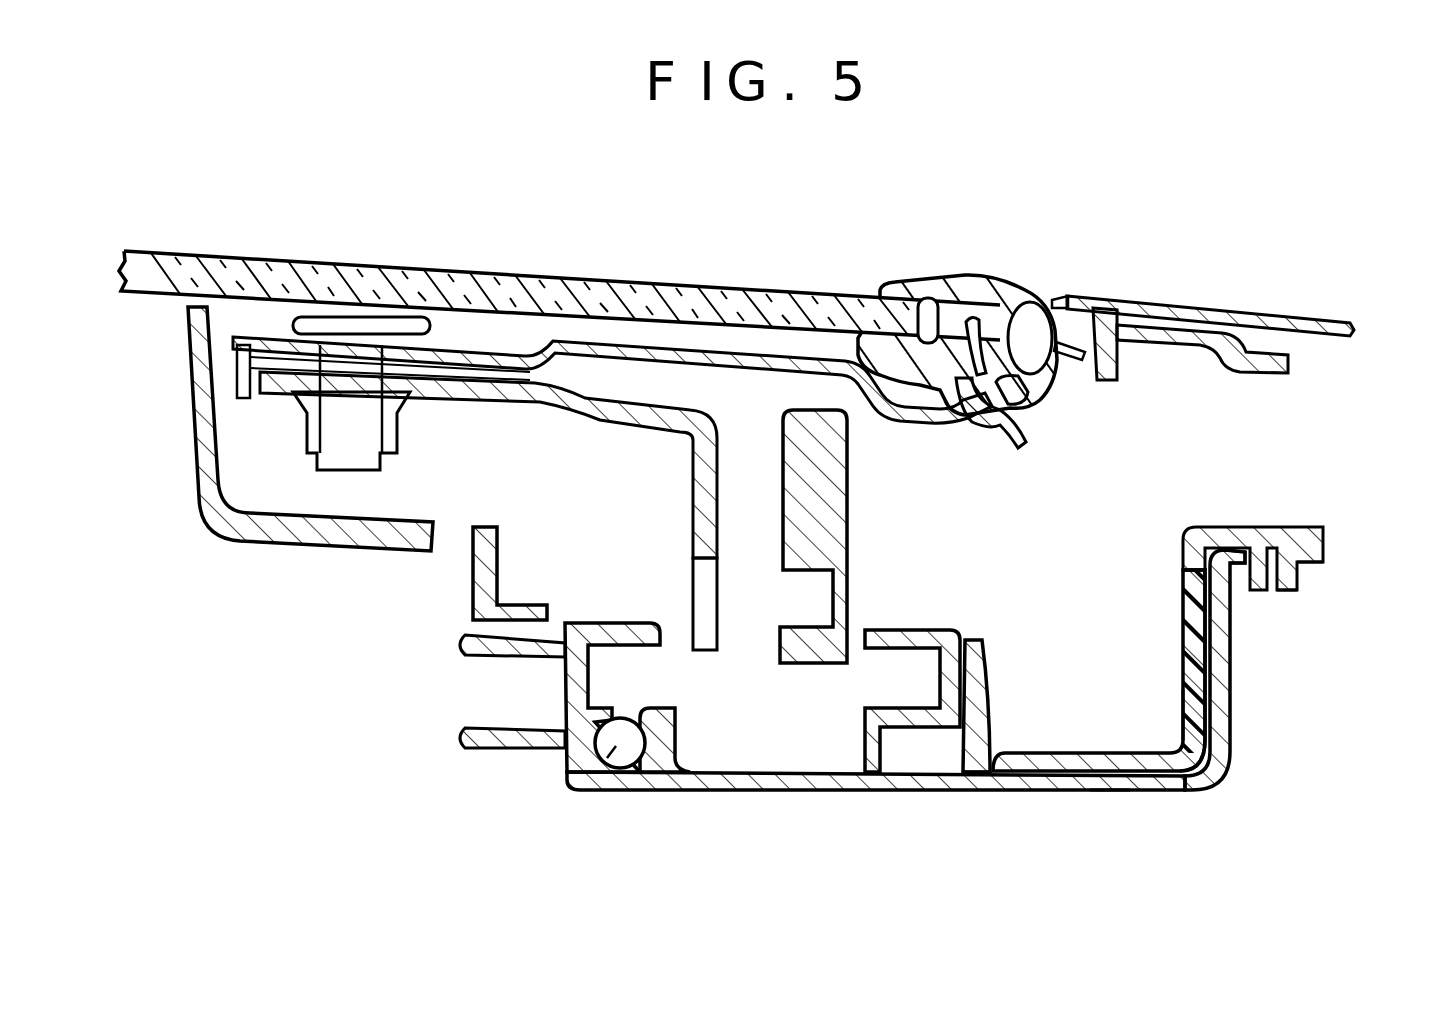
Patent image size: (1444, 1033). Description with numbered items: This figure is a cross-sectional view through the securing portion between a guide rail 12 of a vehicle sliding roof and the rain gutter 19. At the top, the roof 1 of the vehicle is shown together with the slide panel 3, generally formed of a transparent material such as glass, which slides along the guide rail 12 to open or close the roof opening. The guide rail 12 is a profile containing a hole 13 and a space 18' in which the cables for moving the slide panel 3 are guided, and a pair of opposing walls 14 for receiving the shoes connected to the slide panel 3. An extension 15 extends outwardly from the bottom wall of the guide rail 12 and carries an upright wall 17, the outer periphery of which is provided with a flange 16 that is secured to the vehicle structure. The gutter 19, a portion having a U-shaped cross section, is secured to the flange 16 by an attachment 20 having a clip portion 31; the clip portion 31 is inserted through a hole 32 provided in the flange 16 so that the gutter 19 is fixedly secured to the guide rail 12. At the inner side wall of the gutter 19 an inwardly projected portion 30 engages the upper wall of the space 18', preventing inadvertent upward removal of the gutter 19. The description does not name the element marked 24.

The roof 1 is at (1173, 307).
The slide panel 3 is at (750, 292).
The guide rail 12 is at (775, 793).
The hole 13 is at (597, 788).
The opposing walls 14 is at (887, 636).
The extension 15 is at (1108, 792).
The flange 16 is at (1323, 557).
The upright wall 17 is at (1220, 700).
The space 18' is at (981, 843).
The rain gutter 19 is at (1148, 628).
The attachment 20 is at (1203, 532).
The inner wall 24 is at (1128, 702).
The inwardly projected portion 30 is at (958, 732).
The clip portion 31 is at (1295, 592).
The hole 32 is at (1237, 565).